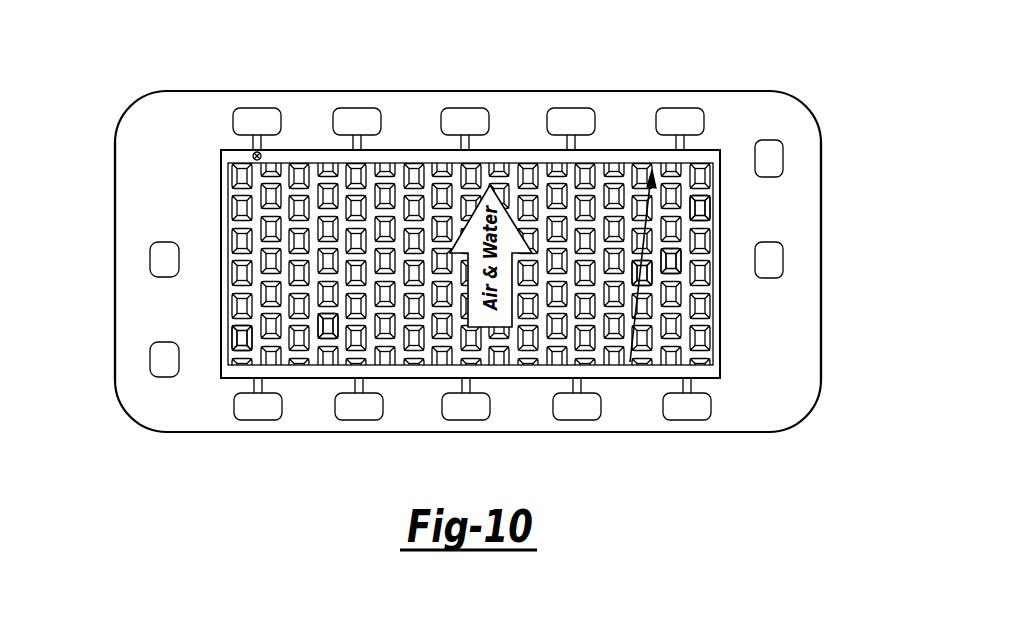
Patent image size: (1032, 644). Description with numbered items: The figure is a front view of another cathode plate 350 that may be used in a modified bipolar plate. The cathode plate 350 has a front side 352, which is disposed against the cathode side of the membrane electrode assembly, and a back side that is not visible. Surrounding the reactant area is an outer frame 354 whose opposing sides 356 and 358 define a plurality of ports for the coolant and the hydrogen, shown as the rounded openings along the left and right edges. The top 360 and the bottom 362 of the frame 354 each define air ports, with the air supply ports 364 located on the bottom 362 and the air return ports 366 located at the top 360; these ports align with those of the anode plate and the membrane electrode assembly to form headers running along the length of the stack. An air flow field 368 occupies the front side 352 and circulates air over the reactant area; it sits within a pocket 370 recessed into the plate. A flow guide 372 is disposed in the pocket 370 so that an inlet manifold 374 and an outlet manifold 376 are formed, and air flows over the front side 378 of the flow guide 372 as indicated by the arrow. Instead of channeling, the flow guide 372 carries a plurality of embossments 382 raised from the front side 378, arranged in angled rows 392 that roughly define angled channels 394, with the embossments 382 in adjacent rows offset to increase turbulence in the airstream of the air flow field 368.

The cathode plate 350 is at (818, 50).
The front side 352 is at (618, 112).
The outer frame 354 is at (774, 158).
The side 356 is at (140, 193).
The side 358 is at (703, 222).
The top 360 is at (508, 113).
The bottom 362 is at (620, 420).
The air supply ports 364 is at (572, 408).
The air return ports 366 is at (358, 118).
The air flow field 368 is at (255, 333).
The pocket 370 is at (722, 342).
The flow guide 372 is at (333, 333).
The inlet manifold 374 is at (713, 373).
The outlet manifold 376 is at (398, 148).
The front side 378 is at (716, 158).
The embossments 382 is at (668, 265).
The angled rows 392 is at (813, 208).
The angled channels 394 is at (643, 283).